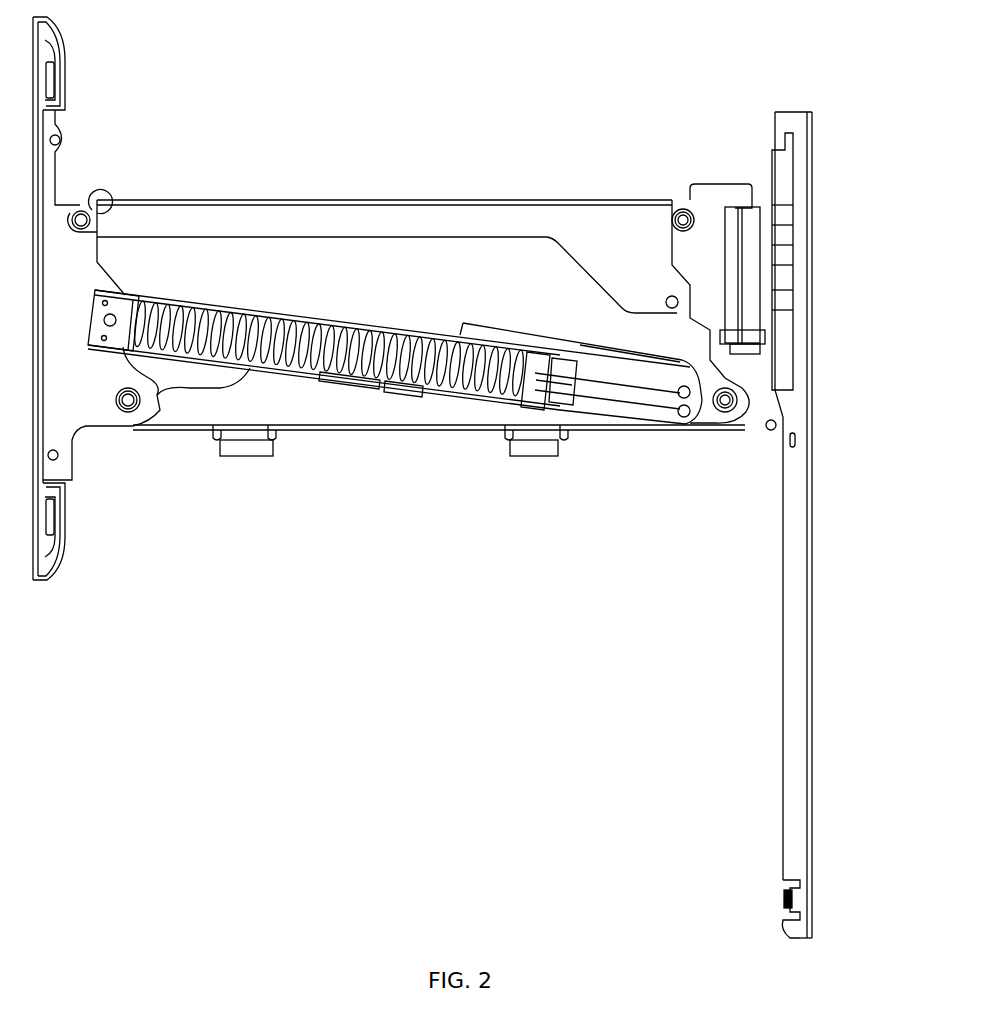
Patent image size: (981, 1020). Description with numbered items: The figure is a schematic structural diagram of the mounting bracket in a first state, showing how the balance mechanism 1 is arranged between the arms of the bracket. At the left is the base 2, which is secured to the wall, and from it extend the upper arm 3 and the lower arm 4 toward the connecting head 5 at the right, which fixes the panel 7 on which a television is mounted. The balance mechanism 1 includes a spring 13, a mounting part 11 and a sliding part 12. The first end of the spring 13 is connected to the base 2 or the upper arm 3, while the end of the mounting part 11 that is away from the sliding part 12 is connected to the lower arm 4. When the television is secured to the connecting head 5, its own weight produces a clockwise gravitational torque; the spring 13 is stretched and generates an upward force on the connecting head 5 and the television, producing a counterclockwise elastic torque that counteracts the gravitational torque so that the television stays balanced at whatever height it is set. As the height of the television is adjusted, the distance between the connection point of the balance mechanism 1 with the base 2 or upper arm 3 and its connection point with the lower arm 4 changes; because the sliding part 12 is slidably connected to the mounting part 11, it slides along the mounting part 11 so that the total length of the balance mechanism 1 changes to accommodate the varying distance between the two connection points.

The balance mechanism 1 is at (340, 325).
The base 2 is at (48, 270).
The upper arm 3 is at (250, 228).
The lower arm 4 is at (251, 404).
The connecting head 5 is at (705, 258).
The panel 7 is at (811, 375).
The mounting part 11 is at (605, 362).
The sliding part 12 is at (360, 390).
The spring 13 is at (437, 395).